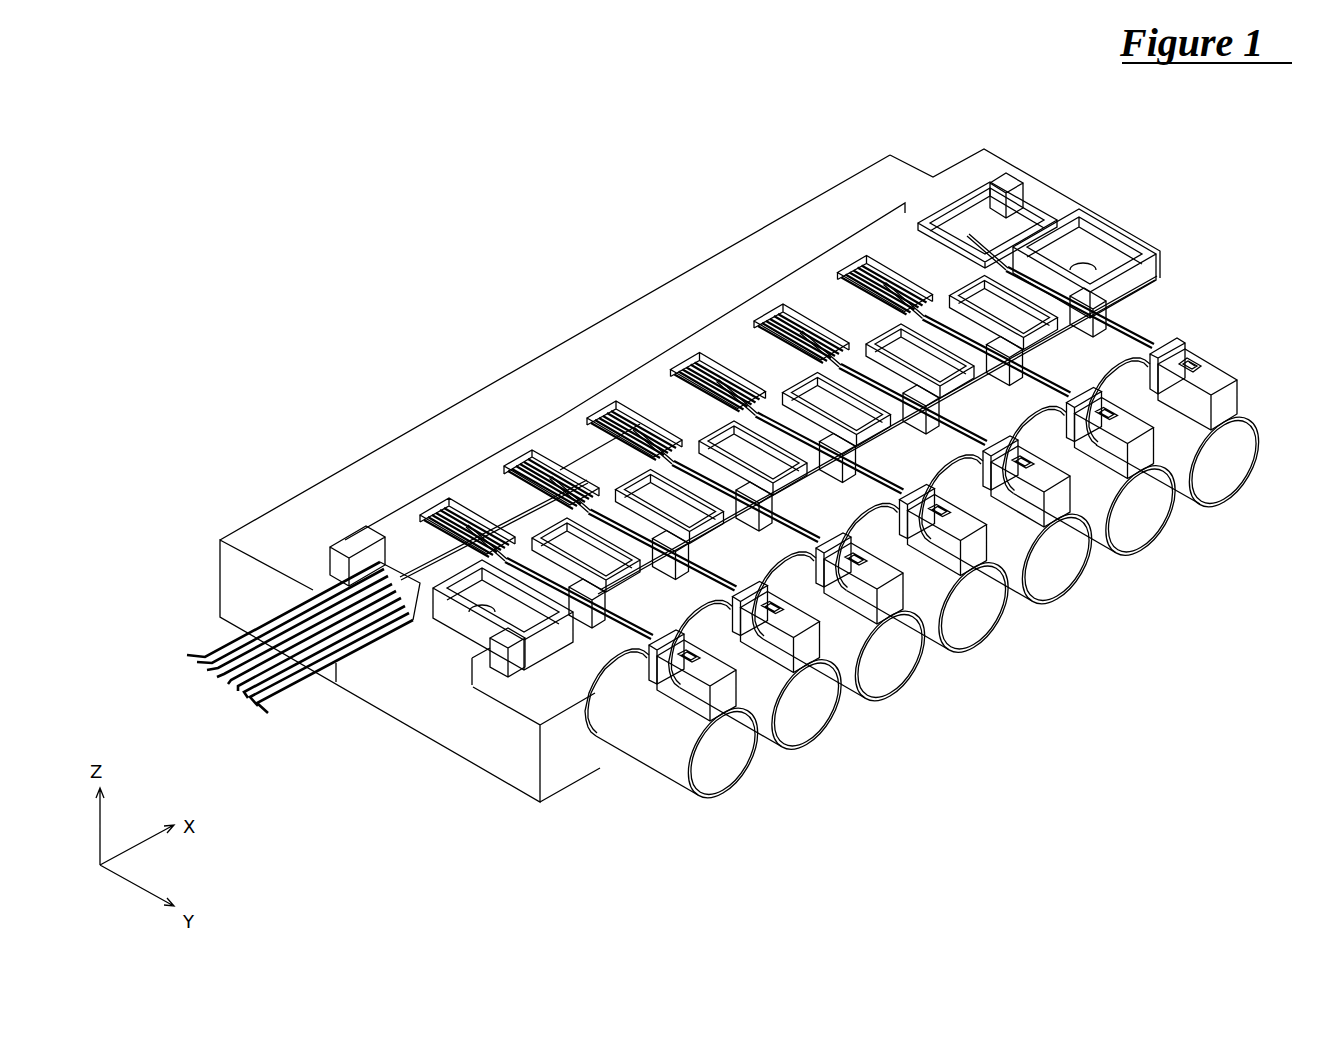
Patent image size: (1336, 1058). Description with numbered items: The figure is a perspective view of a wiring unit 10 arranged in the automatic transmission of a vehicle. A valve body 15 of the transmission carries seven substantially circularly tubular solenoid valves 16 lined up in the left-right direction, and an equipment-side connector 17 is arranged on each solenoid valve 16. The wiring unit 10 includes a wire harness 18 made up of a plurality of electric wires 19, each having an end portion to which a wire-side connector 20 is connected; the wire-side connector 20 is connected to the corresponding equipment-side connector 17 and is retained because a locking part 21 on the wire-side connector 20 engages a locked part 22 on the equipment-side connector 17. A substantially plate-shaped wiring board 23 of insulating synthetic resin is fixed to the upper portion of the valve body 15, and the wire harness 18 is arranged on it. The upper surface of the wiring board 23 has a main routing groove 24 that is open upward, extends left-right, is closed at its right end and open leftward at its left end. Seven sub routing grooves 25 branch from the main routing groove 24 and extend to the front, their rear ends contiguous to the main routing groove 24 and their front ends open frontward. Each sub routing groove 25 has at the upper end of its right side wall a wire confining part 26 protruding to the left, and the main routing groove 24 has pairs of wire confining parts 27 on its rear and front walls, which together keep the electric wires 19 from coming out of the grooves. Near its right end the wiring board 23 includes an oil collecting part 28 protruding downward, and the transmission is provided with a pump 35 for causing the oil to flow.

The wiring unit 10 is at (138, 464).
The valve body 15 is at (420, 700).
The solenoid valve 16 is at (720, 770).
The equipment-side connector 17 is at (1227, 400).
The wire harness 18 is at (265, 620).
The electric wire 19 is at (1148, 348).
The wire-side connector 20 is at (1173, 350).
The locking part 21 is at (1190, 363).
The locked part 22 is at (1207, 377).
The wiring board 23 is at (370, 545).
The main routing groove 24 is at (520, 465).
The sub routing groove 25 is at (1090, 303).
The wire confining part 26 is at (1035, 277).
The wire confining part 27 is at (613, 473).
The oil collecting part 28 is at (880, 178).
The pump 35 is at (330, 485).